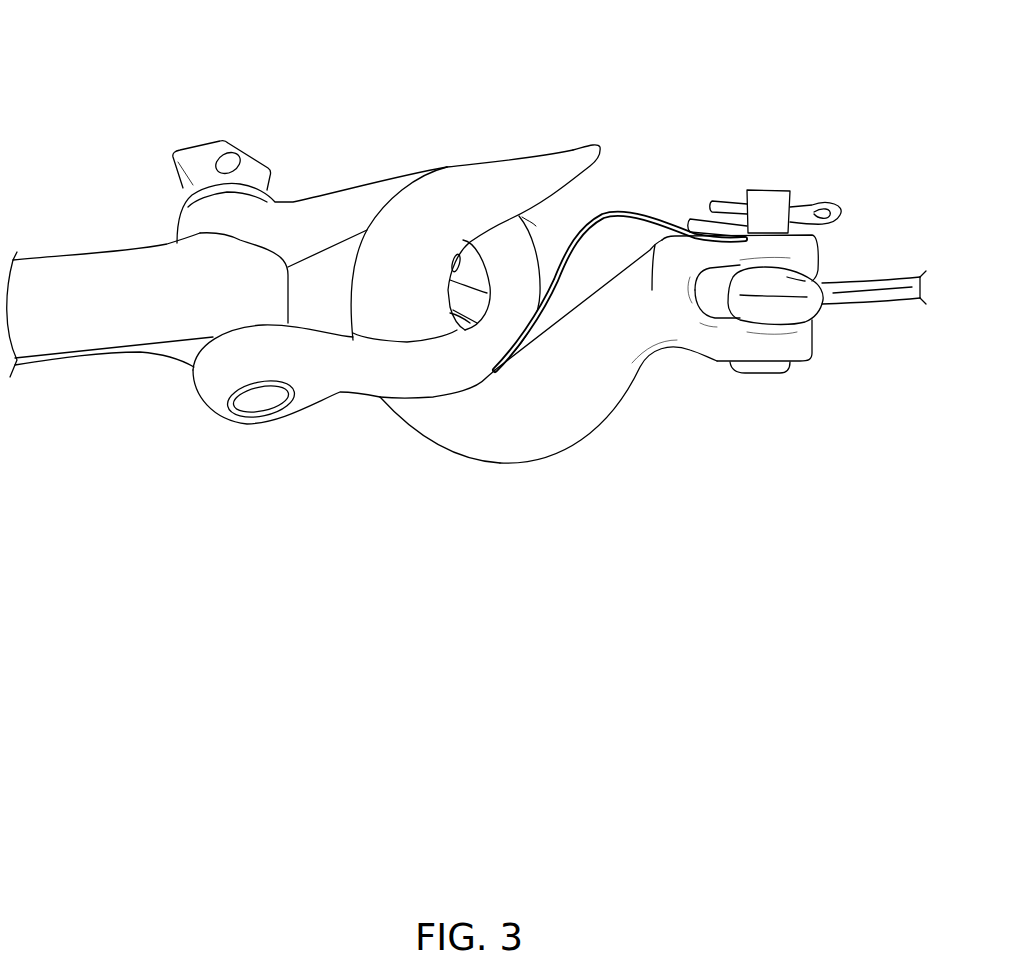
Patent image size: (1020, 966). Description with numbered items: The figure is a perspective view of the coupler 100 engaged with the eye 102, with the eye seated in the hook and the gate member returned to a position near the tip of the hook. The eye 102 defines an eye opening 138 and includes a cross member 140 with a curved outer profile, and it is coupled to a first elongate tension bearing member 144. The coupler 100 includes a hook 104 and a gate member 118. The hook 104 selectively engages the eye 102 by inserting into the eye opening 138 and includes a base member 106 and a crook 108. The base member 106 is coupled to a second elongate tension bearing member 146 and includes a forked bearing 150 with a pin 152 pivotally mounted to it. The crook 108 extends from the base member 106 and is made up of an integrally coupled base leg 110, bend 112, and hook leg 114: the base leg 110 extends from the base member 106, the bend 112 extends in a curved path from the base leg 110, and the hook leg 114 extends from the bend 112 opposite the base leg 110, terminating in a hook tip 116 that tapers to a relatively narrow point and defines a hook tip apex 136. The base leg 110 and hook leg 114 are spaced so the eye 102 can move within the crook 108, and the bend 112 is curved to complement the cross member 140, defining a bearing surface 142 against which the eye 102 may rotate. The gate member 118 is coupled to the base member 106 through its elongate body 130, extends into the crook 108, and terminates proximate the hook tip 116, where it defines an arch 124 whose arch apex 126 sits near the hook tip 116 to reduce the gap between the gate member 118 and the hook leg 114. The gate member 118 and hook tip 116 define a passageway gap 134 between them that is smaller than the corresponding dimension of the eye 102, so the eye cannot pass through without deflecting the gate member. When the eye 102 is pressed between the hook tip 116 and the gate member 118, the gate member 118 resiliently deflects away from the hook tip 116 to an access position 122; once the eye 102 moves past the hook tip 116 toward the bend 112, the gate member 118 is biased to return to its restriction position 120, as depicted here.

The coupler 100 is at (518, 76).
The eye 102 is at (336, 198).
The hook 104 is at (443, 175).
The base member 106 is at (697, 337).
The crook 108 is at (408, 408).
The base leg 110 is at (610, 387).
The bend 112 is at (435, 427).
The hook leg 114 is at (475, 177).
The hook tip 116 is at (590, 157).
The gate member 118 is at (675, 226).
The restriction position 120 is at (632, 196).
The access position 122 is at (618, 220).
The arch 124 is at (656, 281).
The arch apex 126 is at (590, 219).
The elongate body 130 is at (560, 273).
The passageway gap 134 is at (585, 204).
The hook tip apex 136 is at (531, 218).
The eye opening 138 is at (450, 280).
The cross member 140 is at (450, 313).
The bearing surface 142 is at (459, 254).
The first elongate tension bearing member 144 is at (65, 338).
The second elongate tension bearing member 146 is at (883, 293).
The forked bearing 150 is at (803, 347).
The pin 152 is at (776, 191).